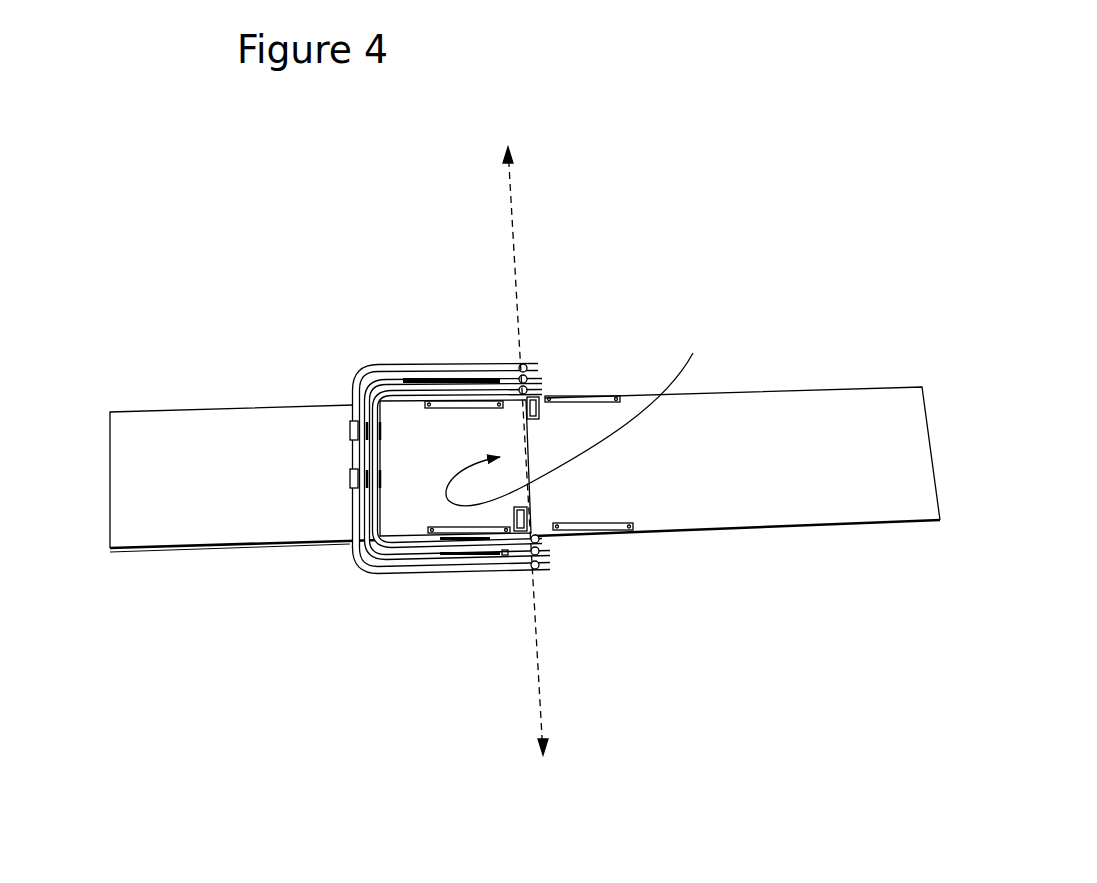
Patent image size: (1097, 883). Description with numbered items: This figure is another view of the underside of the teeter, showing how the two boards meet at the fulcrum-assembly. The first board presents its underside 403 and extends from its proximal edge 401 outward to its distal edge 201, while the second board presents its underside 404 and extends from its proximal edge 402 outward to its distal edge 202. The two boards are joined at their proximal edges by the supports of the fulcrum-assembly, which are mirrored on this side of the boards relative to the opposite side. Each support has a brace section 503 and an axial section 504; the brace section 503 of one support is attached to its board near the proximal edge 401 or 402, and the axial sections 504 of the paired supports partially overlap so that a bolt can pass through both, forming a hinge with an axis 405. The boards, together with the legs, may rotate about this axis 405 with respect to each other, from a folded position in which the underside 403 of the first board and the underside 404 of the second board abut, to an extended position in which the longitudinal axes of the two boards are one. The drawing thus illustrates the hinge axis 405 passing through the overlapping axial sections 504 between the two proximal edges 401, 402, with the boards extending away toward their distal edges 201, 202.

The distal edge of the first board 201 is at (930, 402).
The distal edge of the second board 202 is at (100, 543).
The proximal edge of the first board 401 is at (538, 496).
The proximal edge of the second board 402 is at (585, 412).
The underside of the first board 403 is at (740, 512).
The underside of the second board 404 is at (255, 515).
The axis 405 is at (505, 451).
The brace section 503 is at (593, 390).
The axial section 504 is at (550, 385).